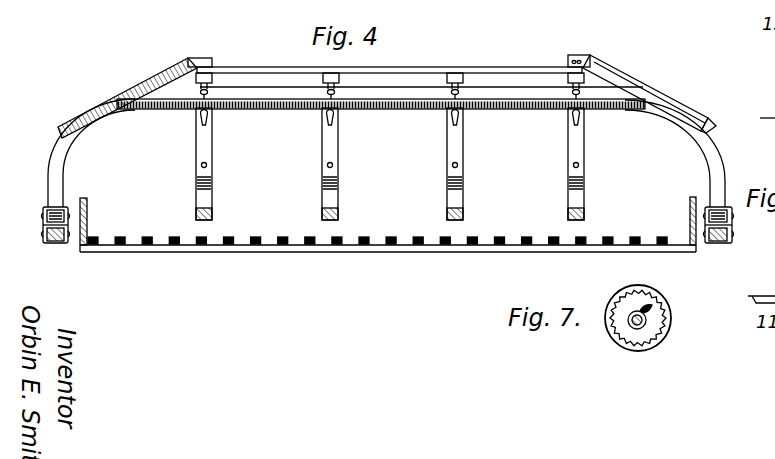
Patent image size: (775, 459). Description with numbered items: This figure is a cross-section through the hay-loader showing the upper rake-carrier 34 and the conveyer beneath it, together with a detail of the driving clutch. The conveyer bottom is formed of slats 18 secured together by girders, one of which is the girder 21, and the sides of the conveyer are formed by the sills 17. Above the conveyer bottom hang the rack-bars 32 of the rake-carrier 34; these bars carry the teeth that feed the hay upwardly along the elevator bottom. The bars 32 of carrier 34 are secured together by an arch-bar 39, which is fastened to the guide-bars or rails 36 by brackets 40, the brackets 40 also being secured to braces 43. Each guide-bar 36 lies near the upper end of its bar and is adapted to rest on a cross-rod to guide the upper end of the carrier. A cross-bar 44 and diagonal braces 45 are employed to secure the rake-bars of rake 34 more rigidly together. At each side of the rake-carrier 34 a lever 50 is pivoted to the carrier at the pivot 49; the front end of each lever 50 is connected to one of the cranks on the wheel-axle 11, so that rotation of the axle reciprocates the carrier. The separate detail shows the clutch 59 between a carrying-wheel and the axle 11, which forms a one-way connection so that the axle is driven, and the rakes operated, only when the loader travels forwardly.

In FIG. 7, the axle 11 is at (640, 332).
In FIG. 4, the sills 17 is at (88, 206).
In FIG. 4, the slats 18 is at (393, 246).
In FIG. 4, the girder 21 is at (430, 250).
In FIG. 4, the rack-bars 32 is at (213, 217).
In FIG. 4, the rake-carrier 34 is at (386, 153).
In FIG. 4, the guide-bar or rail 36 is at (210, 76).
In FIG. 4, the arch-bar 39 is at (536, 104).
In FIG. 4, the brackets 40 is at (212, 120).
In FIG. 4, the braces 43 is at (212, 153).
In FIG. 4, the cross-bar 44 is at (404, 70).
In FIG. 4, the diagonal braces 45 is at (134, 86).
In FIG. 4, the pivot 49 is at (45, 237).
In FIG. 4, the lever 50 is at (60, 240).
In FIG. 7, the clutch 59 is at (661, 306).